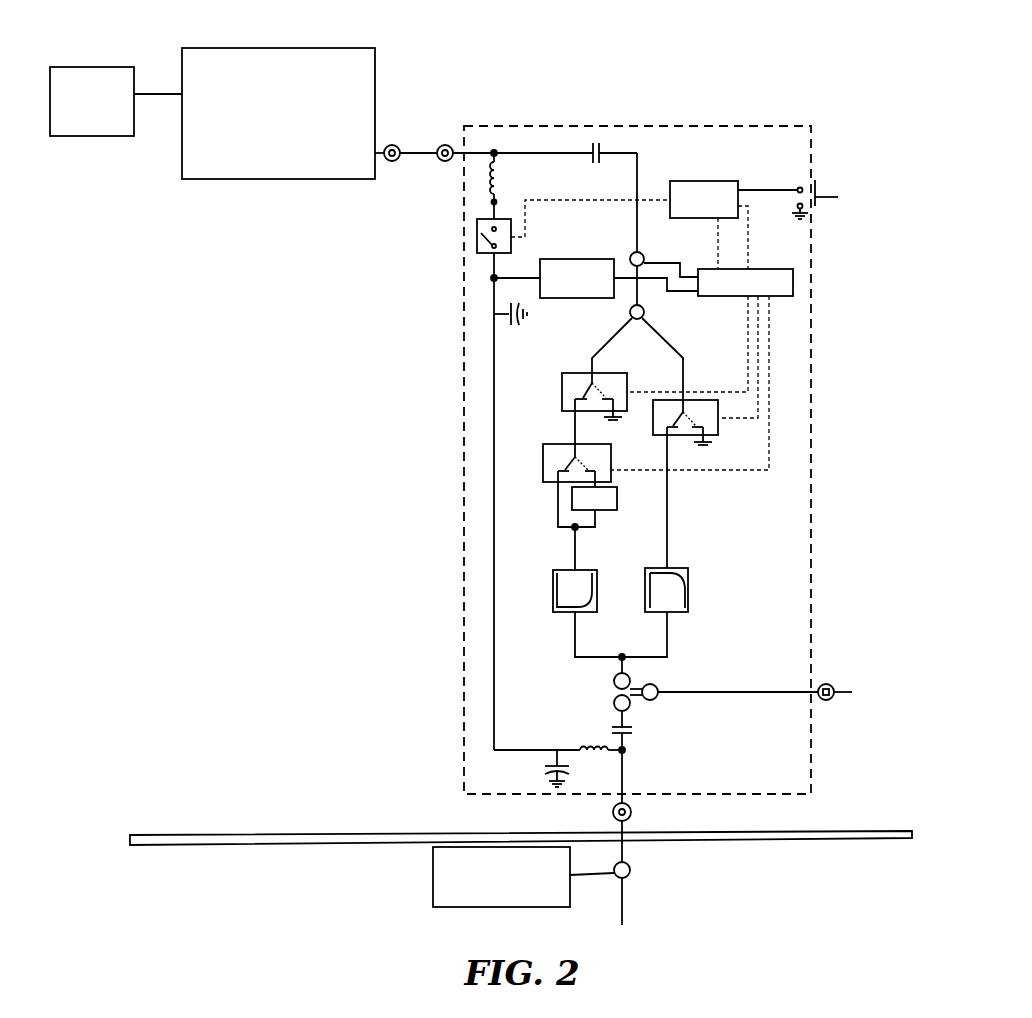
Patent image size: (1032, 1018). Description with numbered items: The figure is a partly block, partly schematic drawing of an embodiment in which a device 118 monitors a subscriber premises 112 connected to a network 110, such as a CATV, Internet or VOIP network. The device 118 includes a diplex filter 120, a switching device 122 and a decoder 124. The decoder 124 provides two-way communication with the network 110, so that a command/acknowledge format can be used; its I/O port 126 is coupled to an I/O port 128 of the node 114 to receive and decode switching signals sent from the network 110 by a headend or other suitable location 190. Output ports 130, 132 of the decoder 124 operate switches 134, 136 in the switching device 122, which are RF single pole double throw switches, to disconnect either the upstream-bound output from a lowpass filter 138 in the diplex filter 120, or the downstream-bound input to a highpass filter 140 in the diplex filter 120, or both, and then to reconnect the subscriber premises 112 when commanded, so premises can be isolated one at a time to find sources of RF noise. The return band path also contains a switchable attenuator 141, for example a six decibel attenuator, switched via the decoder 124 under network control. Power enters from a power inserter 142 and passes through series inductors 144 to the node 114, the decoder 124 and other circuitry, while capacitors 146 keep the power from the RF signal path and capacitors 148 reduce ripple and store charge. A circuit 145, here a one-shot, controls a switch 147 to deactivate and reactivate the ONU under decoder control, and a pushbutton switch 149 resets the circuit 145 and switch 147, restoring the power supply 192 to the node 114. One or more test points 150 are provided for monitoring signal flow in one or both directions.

The network 110 is at (151, 68).
The subscriber premises 112 is at (311, 830).
The node 114 is at (275, 186).
The device for monitoring a subscriber premises 118 is at (798, 124).
The diplex filter 120 is at (716, 570).
The switching device 122 is at (724, 407).
The decoder 124 is at (798, 282).
The I/O port 126 is at (447, 145).
The I/O port 128 is at (398, 145).
The output port 130 is at (748, 298).
The output port 132 is at (757, 300).
The switch 134 is at (562, 392).
The switch 136 is at (719, 425).
The lowpass filter 138 is at (553, 590).
The highpass filter 140 is at (688, 590).
The switchable attenuator 141 is at (617, 497).
The power inserter 142 is at (433, 877).
The series inductor 144 is at (498, 181).
The circuit 145 is at (722, 181).
The capacitor 146 is at (597, 140).
The switch 147 is at (477, 236).
The capacitor 148 is at (521, 322).
The pushbutton switch 149 is at (826, 197).
The test point 150 is at (830, 683).
The headend or other suitable location 190 is at (101, 136).
The power supply 192 is at (583, 258).